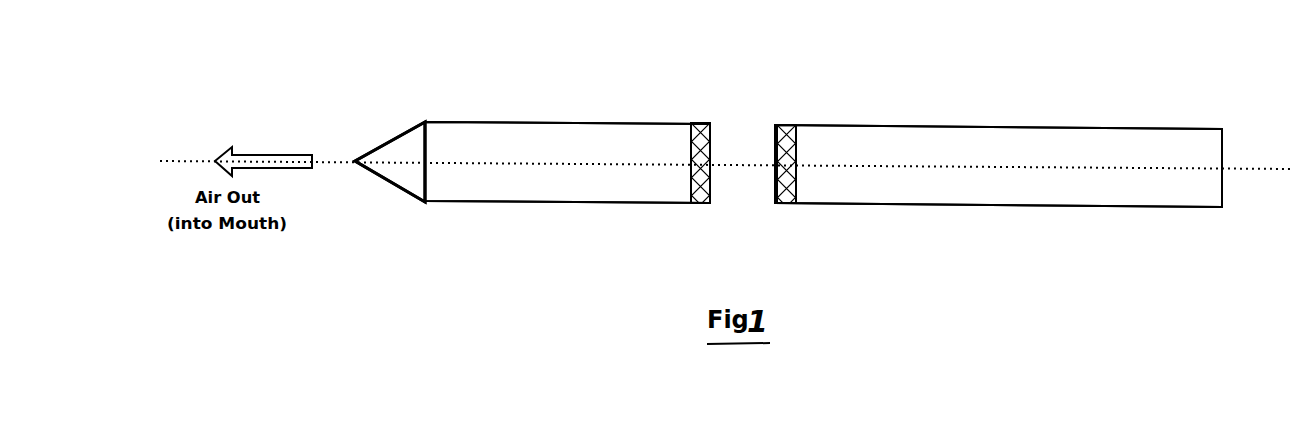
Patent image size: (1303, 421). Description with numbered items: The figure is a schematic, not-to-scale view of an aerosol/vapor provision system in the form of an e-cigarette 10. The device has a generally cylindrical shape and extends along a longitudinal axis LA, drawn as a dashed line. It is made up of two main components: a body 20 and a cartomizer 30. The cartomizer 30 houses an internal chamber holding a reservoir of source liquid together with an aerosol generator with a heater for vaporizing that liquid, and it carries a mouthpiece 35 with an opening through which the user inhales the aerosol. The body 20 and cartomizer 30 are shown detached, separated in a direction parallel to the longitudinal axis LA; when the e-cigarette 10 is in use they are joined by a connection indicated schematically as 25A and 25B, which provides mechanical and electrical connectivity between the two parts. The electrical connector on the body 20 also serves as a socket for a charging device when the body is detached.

The e-cigarette 10 is at (751, 222).
The body 20 is at (1023, 197).
The connection 25A is at (654, 184).
The connection 25B is at (975, 133).
The cartomizer 30 is at (567, 136).
The mouthpiece 35 is at (347, 130).
The longitudinal axis LA is at (729, 153).